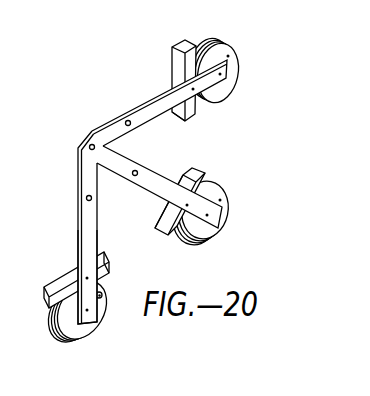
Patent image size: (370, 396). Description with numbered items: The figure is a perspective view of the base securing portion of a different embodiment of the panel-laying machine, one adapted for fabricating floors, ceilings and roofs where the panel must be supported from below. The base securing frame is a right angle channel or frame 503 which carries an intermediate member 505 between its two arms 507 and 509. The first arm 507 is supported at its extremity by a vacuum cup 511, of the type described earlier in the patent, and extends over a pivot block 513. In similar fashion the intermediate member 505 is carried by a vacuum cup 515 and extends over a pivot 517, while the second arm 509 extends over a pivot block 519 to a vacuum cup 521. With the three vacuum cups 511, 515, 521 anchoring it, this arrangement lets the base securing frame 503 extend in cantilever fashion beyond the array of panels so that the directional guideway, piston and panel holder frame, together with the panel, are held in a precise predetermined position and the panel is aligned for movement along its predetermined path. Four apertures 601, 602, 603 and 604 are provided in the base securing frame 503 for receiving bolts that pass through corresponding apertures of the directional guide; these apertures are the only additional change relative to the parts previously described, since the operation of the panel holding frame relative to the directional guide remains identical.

The right angle channel or frame 503 is at (78, 168).
The intermediate member 505 is at (157, 196).
The arm 507 is at (163, 95).
The arm 509 is at (78, 241).
The vacuum cup 511 is at (239, 63).
The pivot block 513 is at (177, 44).
The vacuum cup 515 is at (231, 205).
The pivot 517 is at (203, 175).
The pivot block 519 is at (110, 266).
The vacuum cup 521 is at (50, 313).
The aperture 601 is at (90, 145).
The aperture 602 is at (137, 171).
The aperture 603 is at (86, 198).
The aperture 604 is at (126, 121).